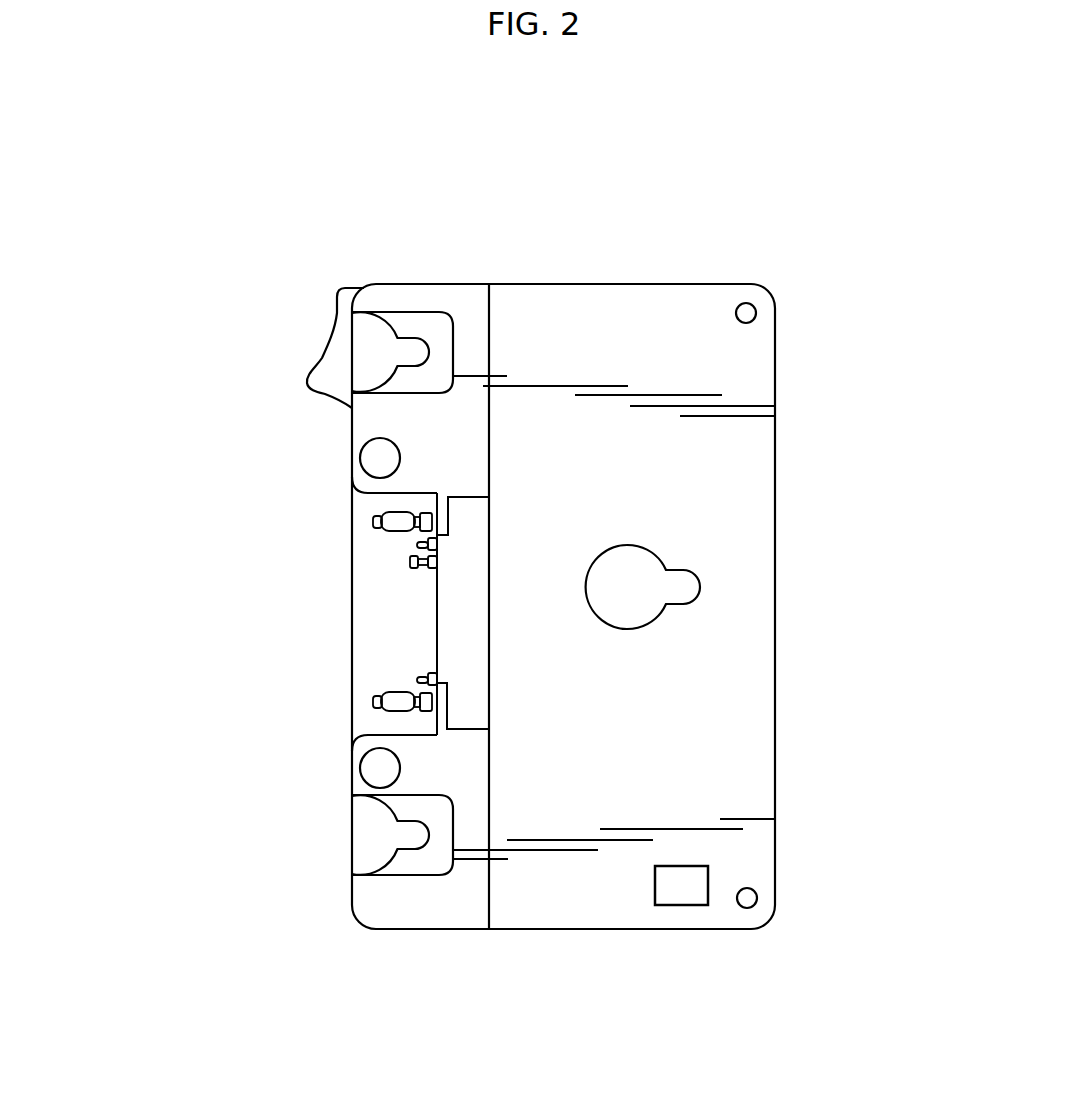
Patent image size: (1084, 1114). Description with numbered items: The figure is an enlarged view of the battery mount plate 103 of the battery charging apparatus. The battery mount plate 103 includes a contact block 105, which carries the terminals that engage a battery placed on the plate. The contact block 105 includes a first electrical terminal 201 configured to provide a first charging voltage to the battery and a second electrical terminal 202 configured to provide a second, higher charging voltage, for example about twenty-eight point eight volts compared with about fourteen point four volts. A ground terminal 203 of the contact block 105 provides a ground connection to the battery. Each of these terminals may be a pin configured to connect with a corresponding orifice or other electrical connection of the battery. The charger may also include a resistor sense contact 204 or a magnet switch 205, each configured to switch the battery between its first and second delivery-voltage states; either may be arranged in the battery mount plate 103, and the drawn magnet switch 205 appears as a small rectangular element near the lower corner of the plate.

The battery mount plate 103 is at (810, 320).
The contact block 105 is at (392, 625).
The first electrical terminal 201 is at (373, 521).
The second electrical terminal 202 is at (410, 563).
The ground terminal 203 is at (373, 703).
The resistor sense contact 204 is at (417, 545).
The magnet switch 205 is at (692, 885).